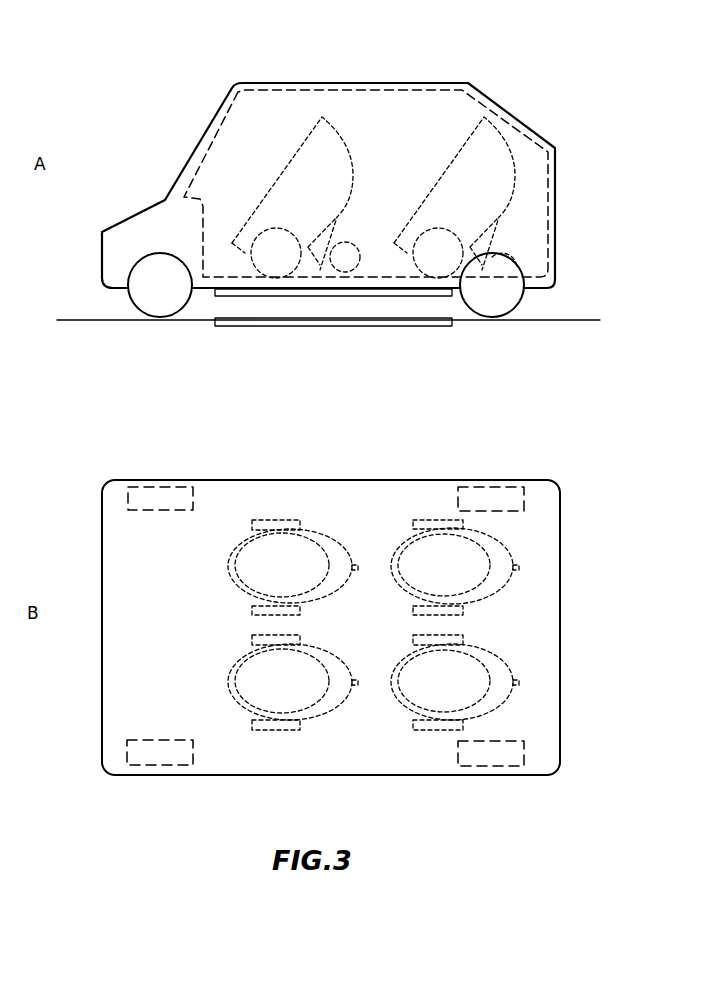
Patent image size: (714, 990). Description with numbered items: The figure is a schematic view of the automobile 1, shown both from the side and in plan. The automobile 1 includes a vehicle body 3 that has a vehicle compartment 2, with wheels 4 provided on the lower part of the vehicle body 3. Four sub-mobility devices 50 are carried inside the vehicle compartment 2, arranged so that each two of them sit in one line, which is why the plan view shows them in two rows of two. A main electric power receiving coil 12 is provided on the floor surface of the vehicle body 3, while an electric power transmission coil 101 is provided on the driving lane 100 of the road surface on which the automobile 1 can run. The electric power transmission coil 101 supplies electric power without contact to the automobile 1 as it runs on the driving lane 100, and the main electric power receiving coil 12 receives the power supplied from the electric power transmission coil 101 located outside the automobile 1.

The automobile 1 is at (323, 164).
The vehicle compartment 2 is at (402, 100).
The vehicle body 3 is at (212, 120).
The wheels 4 is at (160, 300).
The main electric power receiving coil 12 is at (307, 297).
The sub-mobility devices 50 is at (307, 157).
The driving lane 100 is at (588, 317).
The electric power transmission coil 101 is at (405, 327).